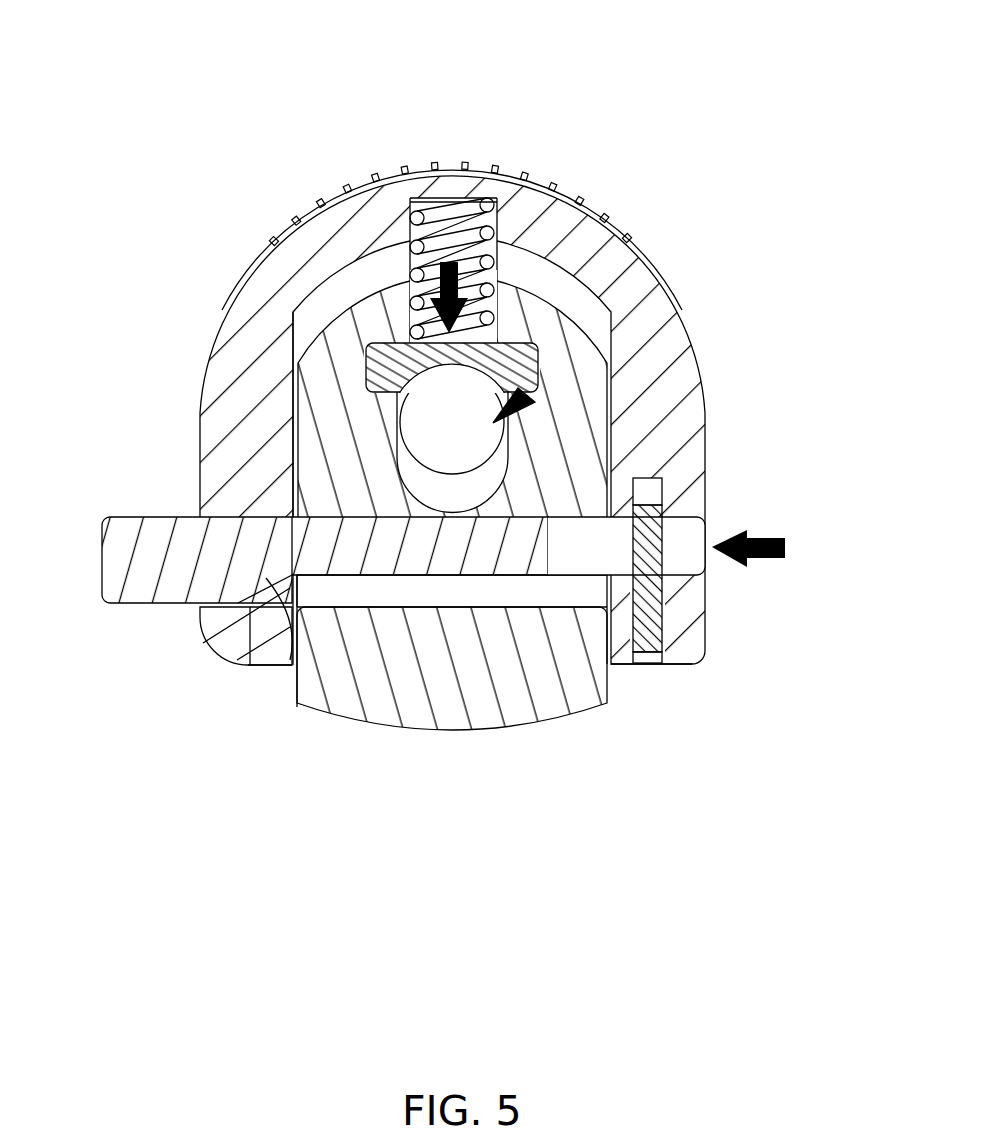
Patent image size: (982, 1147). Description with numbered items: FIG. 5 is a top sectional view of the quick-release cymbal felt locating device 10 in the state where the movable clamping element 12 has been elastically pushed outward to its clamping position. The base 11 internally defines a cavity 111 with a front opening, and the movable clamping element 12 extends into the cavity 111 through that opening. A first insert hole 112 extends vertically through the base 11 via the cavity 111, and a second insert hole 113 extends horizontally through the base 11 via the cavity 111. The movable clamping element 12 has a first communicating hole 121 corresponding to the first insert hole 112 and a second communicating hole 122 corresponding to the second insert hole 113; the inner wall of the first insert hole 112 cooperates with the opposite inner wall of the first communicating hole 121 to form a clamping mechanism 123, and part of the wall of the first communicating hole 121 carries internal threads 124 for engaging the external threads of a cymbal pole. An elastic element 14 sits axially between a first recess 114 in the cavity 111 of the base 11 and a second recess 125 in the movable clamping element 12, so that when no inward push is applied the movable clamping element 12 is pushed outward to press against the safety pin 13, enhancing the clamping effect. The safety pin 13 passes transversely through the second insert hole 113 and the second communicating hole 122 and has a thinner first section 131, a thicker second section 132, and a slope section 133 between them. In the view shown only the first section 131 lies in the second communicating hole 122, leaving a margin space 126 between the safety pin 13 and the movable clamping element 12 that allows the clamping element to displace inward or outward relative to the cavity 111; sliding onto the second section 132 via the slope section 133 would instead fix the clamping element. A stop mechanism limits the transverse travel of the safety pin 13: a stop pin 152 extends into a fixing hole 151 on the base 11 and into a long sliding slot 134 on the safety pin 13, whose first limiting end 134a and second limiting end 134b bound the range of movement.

The quick-release cymbal felt locating device 10 is at (459, 26).
The base 11 is at (455, 422).
The cavity 111 is at (608, 310).
The first insert hole 112 is at (340, 405).
The second insert hole 113 is at (240, 665).
The first recess 114 is at (461, 198).
The movable clamping element 12 is at (459, 574).
The first communicating hole 121 is at (380, 455).
The second communicating hole 122 is at (450, 607).
The clamping mechanism 123 is at (527, 407).
The internal threads 124 is at (372, 343).
The second recess 125 is at (490, 240).
The margin space 126 is at (355, 592).
The safety pin 13 is at (430, 610).
The first section 131 is at (497, 556).
The second section 132 is at (143, 583).
The slope section 133 is at (283, 668).
The sliding slot 134 is at (573, 580).
The first limiting end 134a is at (553, 520).
The second limiting end 134b is at (700, 572).
The elastic element 14 is at (407, 195).
The fixing hole 151 is at (655, 665).
The stop pin 152 is at (640, 663).